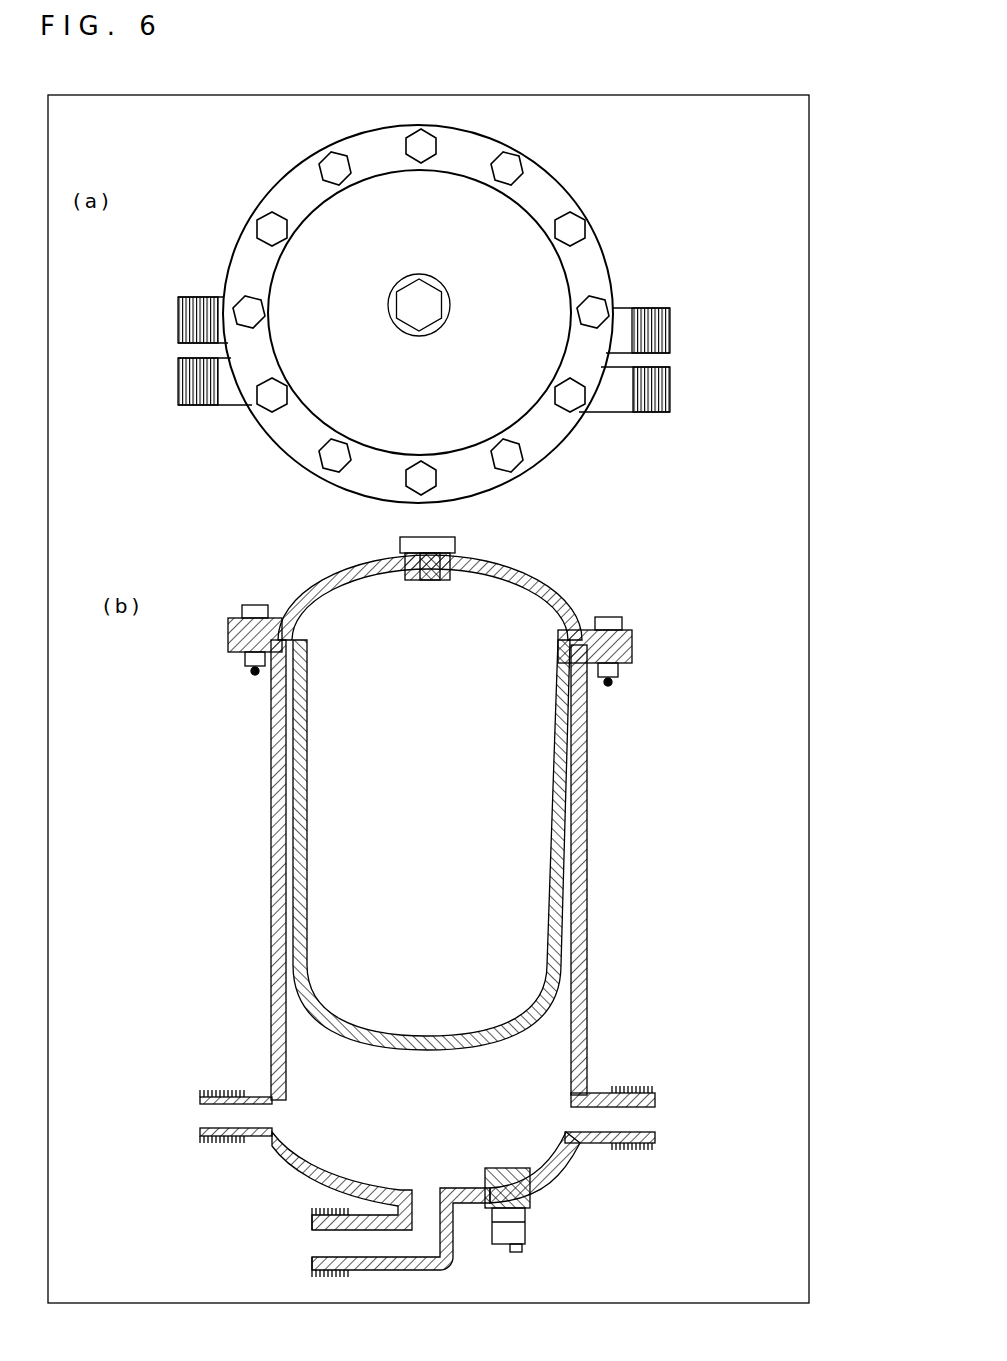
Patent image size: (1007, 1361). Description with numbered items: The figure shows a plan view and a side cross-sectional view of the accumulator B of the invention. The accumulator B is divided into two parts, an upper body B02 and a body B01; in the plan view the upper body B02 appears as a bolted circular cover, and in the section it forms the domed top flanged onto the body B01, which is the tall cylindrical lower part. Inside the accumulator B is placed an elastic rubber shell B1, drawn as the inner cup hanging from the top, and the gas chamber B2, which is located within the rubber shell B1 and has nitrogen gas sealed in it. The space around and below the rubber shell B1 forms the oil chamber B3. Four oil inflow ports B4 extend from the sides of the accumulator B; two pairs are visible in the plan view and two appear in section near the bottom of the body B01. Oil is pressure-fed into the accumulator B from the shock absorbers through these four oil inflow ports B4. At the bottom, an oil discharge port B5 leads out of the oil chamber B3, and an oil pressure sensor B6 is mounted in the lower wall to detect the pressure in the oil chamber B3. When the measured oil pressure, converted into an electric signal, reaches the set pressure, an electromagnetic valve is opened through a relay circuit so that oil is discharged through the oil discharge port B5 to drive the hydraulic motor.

The accumulator B is at (570, 603).
The body B01 is at (272, 752).
The upper body B02 is at (590, 265).
The rubber shell B1 is at (565, 738).
The gas chamber B2 is at (512, 848).
The oil chamber B3 is at (483, 1113).
The oil inflow port B4 is at (178, 318).
The oil discharge port B5 is at (330, 1245).
The oil pressure sensor B6 is at (525, 1223).